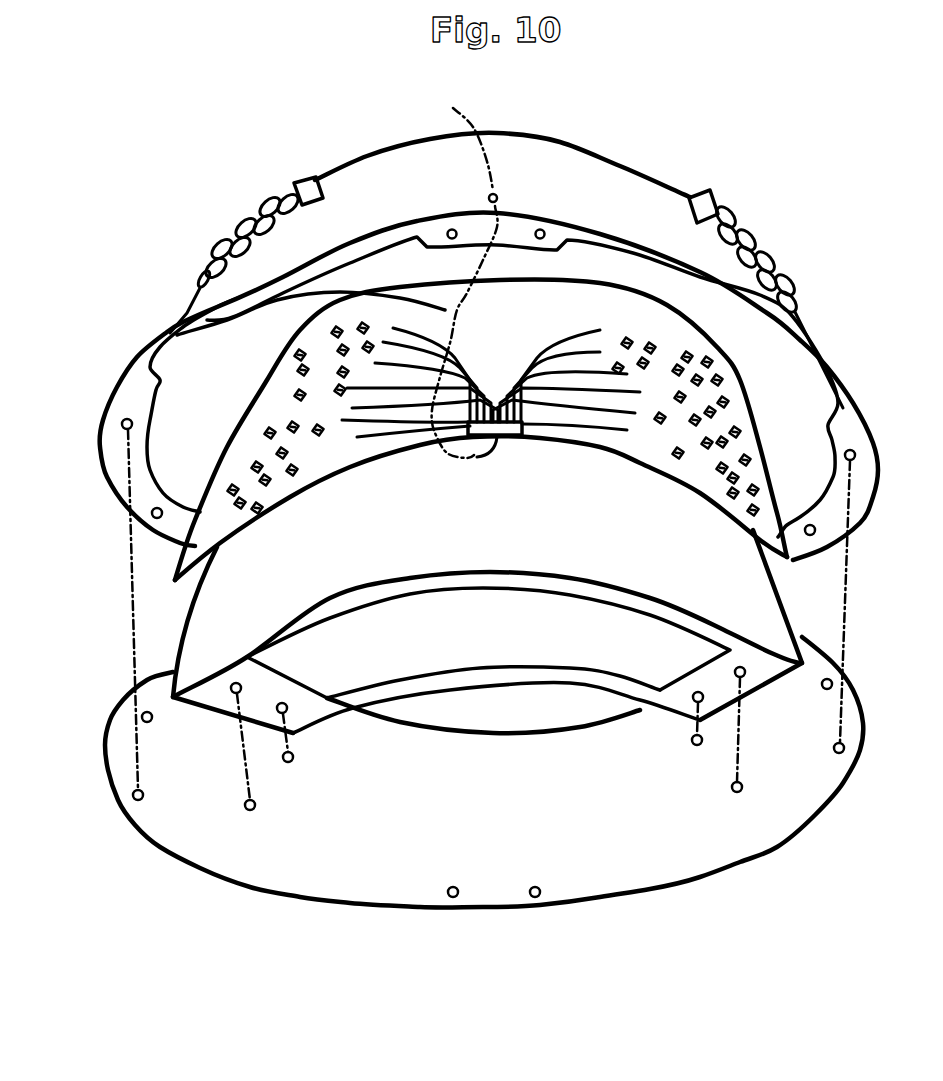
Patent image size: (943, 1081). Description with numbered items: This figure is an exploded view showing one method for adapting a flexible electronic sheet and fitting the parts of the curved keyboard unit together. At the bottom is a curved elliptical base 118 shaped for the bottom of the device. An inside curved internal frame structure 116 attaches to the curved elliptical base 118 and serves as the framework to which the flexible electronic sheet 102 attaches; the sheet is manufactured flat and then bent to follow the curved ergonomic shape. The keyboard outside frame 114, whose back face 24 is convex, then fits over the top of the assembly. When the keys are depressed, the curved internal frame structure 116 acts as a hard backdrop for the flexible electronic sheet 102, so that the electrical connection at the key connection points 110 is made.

The keyboard outside frame 114 is at (358, 123).
The back face 24 is at (558, 158).
The flexible electronic sheet 102 is at (177, 335).
The key connection points 110 is at (280, 382).
The curved internal frame structure 116 is at (240, 585).
The curved elliptical base 118 is at (210, 823).